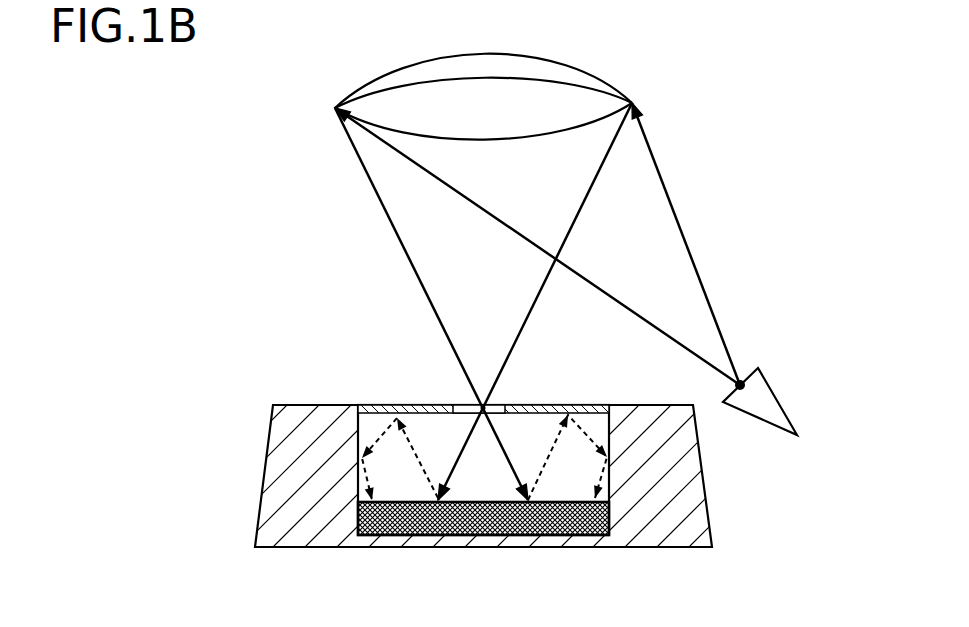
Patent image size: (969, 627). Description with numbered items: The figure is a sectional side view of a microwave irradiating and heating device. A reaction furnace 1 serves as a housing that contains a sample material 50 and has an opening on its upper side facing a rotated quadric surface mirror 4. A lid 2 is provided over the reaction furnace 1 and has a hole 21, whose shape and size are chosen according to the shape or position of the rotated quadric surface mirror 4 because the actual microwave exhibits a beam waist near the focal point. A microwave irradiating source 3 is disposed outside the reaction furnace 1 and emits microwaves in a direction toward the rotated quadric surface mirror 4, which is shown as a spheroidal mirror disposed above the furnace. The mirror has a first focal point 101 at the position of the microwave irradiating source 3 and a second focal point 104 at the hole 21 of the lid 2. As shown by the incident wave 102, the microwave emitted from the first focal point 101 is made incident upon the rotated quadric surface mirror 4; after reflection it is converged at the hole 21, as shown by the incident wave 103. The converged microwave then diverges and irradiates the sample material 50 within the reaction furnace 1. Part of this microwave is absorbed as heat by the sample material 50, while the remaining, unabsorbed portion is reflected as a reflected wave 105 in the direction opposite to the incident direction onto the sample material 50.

The reaction furnace 1 is at (272, 457).
The lid 2 is at (397, 405).
The hole 21 is at (468, 408).
The microwave irradiating source 3 is at (782, 403).
The rotated quadric surface mirror 4 is at (600, 71).
The sample material 50 is at (415, 527).
The first focal point 101 is at (742, 382).
The incident wave 102 is at (663, 183).
The incident wave 103 is at (380, 205).
The second focal point 104 is at (497, 402).
The reflected wave 105 is at (545, 470).